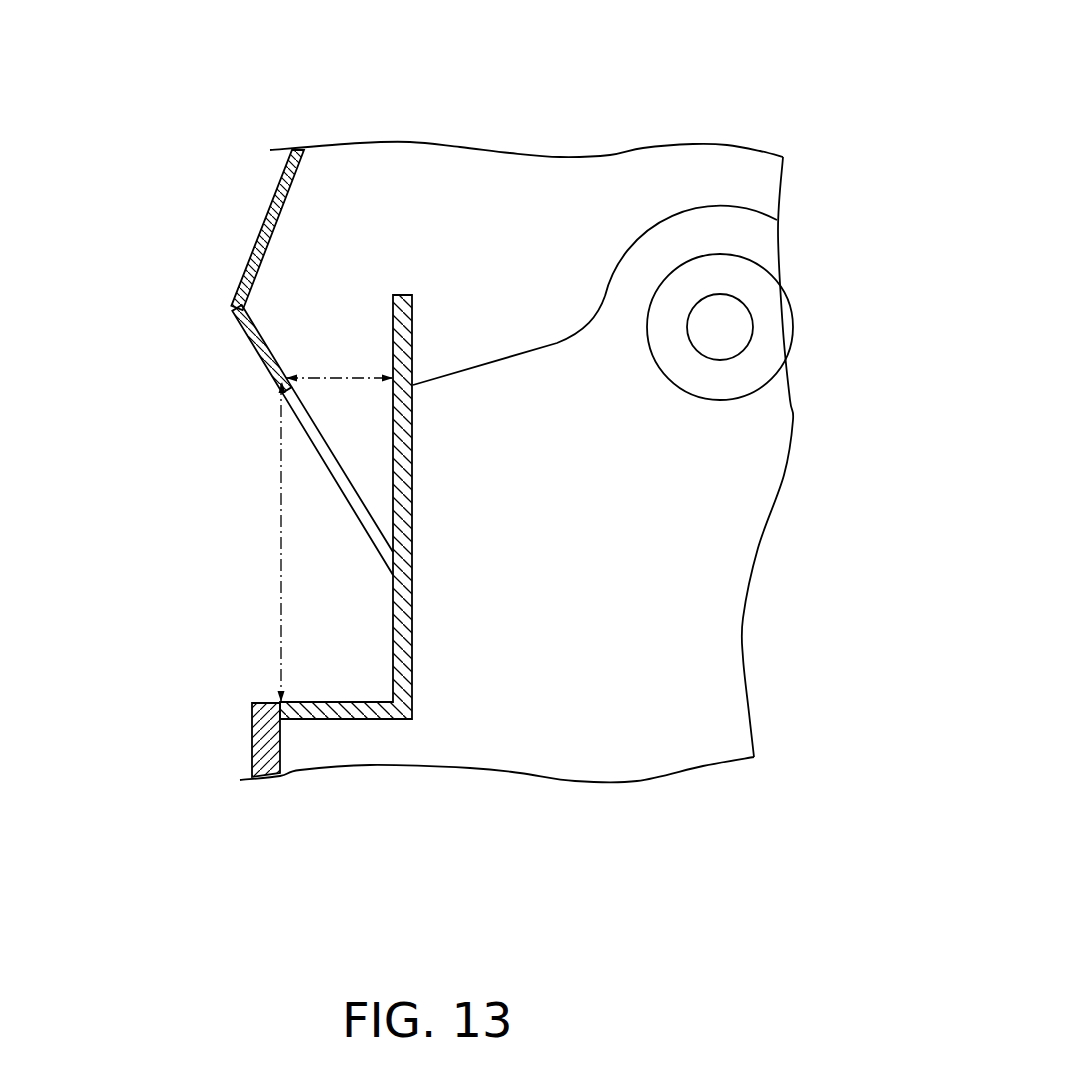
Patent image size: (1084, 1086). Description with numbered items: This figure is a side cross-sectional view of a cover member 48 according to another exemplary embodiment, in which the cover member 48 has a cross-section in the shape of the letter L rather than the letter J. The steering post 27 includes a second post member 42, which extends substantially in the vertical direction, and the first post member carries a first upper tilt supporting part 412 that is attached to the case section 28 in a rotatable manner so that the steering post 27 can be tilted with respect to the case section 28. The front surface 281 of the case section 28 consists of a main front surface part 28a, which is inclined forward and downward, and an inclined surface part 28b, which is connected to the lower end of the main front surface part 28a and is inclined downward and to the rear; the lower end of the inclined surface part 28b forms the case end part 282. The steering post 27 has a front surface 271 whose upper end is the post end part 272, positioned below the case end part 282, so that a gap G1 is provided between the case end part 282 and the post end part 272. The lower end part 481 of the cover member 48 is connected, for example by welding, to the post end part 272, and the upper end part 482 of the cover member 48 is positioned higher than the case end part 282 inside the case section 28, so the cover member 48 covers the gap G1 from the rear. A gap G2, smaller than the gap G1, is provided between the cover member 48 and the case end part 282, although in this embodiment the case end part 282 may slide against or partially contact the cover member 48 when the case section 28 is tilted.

The second post member 42 is at (516, 449).
The first upper tilt supporting part 412 is at (747, 280).
The cover member 48 is at (296, 472).
The lower end part of the cover member 481 is at (275, 710).
The upper end part of the cover member 482 is at (403, 295).
The steering post 27 is at (181, 722).
The front surface of the steering post 271 is at (252, 762).
The post end part 272 is at (262, 700).
The case section 28 is at (254, 339).
The main front surface part 28a is at (277, 188).
The inclined surface part 28b is at (247, 348).
The front surface of the case section 281 is at (209, 207).
The case end part 282 is at (257, 440).
The gap G1 is at (283, 553).
The gap G2 is at (350, 378).